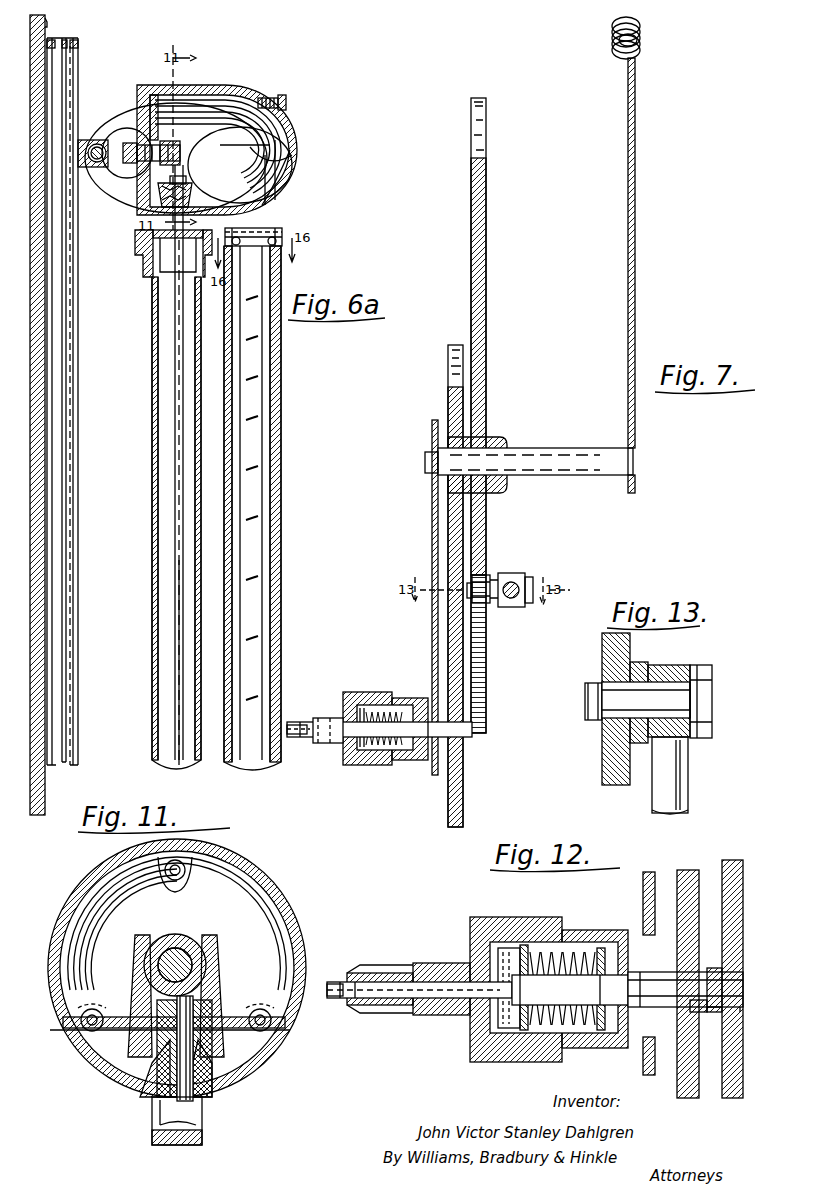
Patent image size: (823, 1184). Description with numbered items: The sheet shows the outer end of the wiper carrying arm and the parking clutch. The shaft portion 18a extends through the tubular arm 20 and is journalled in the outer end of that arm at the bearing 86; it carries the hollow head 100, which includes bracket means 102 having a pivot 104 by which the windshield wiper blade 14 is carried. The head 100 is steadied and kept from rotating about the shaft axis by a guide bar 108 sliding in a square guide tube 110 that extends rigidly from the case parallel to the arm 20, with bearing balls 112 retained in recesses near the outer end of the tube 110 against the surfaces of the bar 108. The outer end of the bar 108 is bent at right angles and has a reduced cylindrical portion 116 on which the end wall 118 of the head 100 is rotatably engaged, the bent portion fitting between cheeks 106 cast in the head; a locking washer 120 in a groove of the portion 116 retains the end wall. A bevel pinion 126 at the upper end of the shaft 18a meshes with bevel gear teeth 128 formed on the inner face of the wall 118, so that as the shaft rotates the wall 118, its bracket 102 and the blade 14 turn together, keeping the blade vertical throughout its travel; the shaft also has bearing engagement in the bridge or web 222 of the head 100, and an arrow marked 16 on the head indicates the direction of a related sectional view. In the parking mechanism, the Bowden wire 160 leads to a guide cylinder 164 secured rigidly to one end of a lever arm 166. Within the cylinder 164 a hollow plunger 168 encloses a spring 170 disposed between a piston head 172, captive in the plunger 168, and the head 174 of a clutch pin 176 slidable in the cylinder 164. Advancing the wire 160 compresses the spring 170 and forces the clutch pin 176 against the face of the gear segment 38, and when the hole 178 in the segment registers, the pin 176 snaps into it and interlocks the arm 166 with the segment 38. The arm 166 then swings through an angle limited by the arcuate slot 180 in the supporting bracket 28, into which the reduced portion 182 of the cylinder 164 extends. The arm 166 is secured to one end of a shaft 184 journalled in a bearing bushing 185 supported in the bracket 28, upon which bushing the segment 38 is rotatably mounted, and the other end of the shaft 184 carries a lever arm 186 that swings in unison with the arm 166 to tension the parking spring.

In FIG. 6A, the windshield wiper blade 14 is at (66, 344).
In FIG. 6A, the housing dome 16 is at (305, 147).
In FIG. 6A, the shaft portion 18a is at (160, 568).
In FIG. 6A, the tubular arm 20 is at (152, 392).
In FIG. 7, the supporting bracket 28 is at (448, 503).
In FIG. 12, the supporting bracket 28 is at (688, 870).
In FIG. 12, the gear segment 38 is at (744, 918).
In FIG. 6A, the bearing 86 is at (166, 278).
In FIG. 6A, the hollow head 100 is at (254, 88).
In FIG. 11, the hollow head 100 is at (302, 893).
In FIG. 6A, the bracket means 102 is at (120, 196).
In FIG. 6A, the pivot 104 is at (99, 141).
In FIG. 6A, the cheeks 106 is at (250, 147).
In FIG. 11, the cheeks 106 is at (135, 976).
In FIG. 6A, the guide bar 108 is at (262, 380).
In FIG. 6A, the guide tube 110 is at (283, 336).
In FIG. 6A, the bearing balls 112 is at (283, 246).
In FIG. 6A, the reduced cylindrical portion 116 is at (170, 145).
In FIG. 6A, the end wall 118 is at (150, 115).
In FIG. 6A, the locking washer 120 is at (108, 192).
In FIG. 6A, the bevel pinion 126 is at (200, 198).
In FIG. 6A, the bevel gear teeth 128 is at (138, 258).
In FIG. 12, the Bowden wire 160 is at (338, 982).
In FIG. 12, the guide cylinder 164 is at (585, 1050).
In FIG. 7, the lever arm 166 is at (433, 545).
In FIG. 12, the lever arm 166 is at (644, 961).
In FIG. 12, the hollow plunger 168 is at (580, 950).
In FIG. 12, the spring 170 is at (603, 948).
In FIG. 12, the piston head 172 is at (522, 945).
In FIG. 12, the head of clutch pin 174 is at (615, 1050).
In FIG. 12, the clutch pin 176 is at (745, 986).
In FIG. 12, the hole 178 is at (740, 1012).
In FIG. 12, the arcuate slot 180 is at (710, 1012).
In FIG. 12, the reduced portion 182 is at (722, 972).
In FIG. 7, the shaft 184 is at (590, 448).
In FIG. 7, the bearing bushing 185 is at (507, 440).
In FIG. 7, the lever arm 186 is at (636, 180).
In FIG. 6A, the bridge or web 222 is at (240, 165).
In FIG. 11, the bridge or web 222 is at (250, 1048).